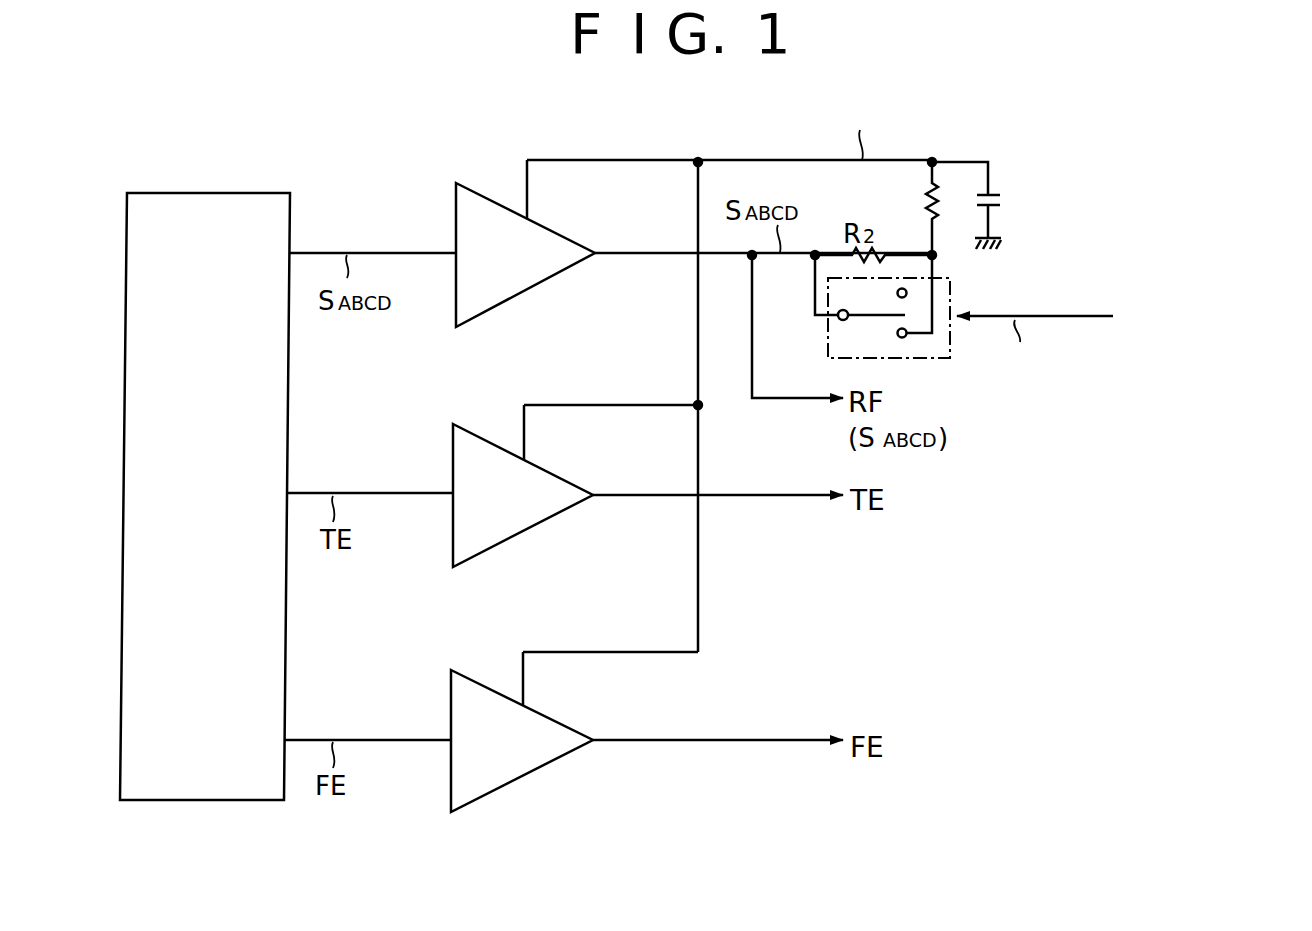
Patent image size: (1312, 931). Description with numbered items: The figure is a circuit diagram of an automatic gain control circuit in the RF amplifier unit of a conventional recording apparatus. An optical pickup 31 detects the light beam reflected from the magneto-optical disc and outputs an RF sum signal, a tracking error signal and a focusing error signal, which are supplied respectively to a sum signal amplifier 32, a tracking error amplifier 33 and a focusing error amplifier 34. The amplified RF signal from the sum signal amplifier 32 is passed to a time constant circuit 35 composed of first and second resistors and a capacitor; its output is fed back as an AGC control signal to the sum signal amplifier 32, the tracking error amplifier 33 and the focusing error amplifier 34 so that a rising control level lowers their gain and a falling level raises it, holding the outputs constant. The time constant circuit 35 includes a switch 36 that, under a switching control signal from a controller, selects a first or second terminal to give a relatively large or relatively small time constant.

The optical pickup 31 is at (210, 802).
The sum signal amplifier 32 is at (530, 290).
The tracking error amplifier 33 is at (525, 532).
The focusing error amplifier 34 is at (520, 782).
The time constant circuit 35 is at (952, 137).
The switch 36 is at (951, 290).